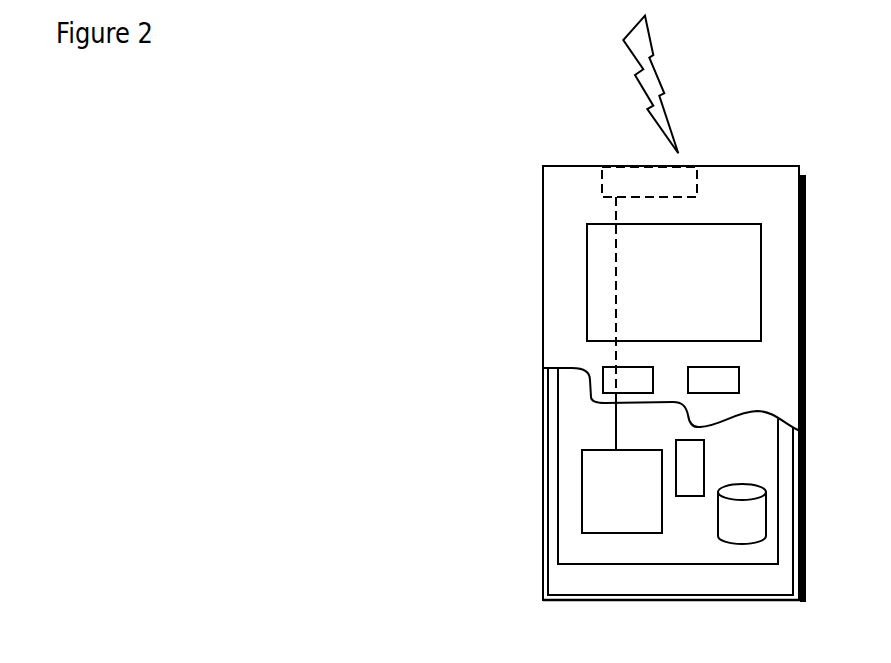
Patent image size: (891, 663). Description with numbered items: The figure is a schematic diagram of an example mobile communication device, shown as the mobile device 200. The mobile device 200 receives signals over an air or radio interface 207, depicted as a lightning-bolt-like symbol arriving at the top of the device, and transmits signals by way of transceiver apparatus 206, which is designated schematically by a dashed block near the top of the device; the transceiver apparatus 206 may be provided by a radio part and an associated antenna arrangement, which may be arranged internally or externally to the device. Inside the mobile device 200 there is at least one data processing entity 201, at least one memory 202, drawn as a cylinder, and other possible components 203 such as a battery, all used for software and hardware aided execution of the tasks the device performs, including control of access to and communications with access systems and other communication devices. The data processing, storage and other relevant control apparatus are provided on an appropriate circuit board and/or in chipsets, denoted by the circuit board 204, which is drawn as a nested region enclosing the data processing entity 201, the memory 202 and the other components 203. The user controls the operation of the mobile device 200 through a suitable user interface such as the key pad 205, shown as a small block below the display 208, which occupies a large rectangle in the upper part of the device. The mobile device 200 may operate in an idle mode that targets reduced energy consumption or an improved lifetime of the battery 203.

The mobile device 200 is at (543, 201).
The data processing entity 201 is at (587, 477).
The memory 202 is at (737, 526).
The other possible components 203 is at (690, 457).
The circuit board 204 is at (582, 549).
The key pad 205 is at (607, 380).
The transceiver apparatus 206 is at (689, 178).
The air or radio interface 207 is at (675, 108).
The display 208 is at (602, 270).